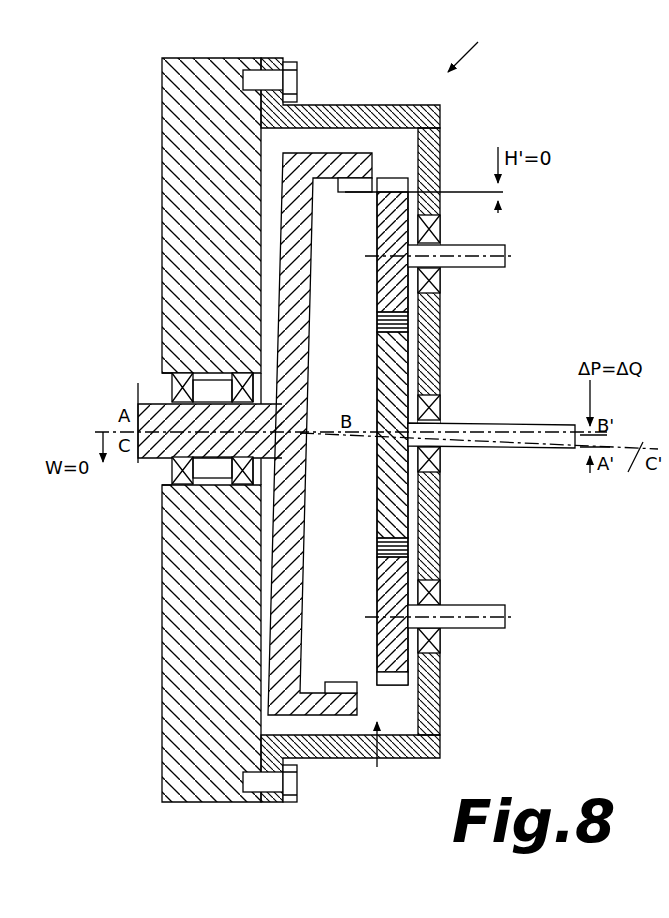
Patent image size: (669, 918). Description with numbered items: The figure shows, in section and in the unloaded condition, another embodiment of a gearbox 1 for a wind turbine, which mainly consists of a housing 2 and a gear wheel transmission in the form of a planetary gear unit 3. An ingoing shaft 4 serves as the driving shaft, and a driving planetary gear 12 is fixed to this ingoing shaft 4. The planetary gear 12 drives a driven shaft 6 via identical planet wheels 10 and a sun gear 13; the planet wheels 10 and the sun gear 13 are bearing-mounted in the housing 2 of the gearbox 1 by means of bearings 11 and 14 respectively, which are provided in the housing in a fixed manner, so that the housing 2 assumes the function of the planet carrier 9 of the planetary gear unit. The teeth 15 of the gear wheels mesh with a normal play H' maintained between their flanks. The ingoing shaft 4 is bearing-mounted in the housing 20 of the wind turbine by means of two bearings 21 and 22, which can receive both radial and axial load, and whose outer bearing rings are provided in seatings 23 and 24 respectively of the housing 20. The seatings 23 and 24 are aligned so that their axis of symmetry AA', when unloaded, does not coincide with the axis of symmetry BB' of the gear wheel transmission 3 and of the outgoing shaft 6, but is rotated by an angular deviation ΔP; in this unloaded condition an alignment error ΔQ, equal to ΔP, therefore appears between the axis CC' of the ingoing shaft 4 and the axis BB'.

The gearbox 1 is at (465, 46).
The housing 2 is at (442, 108).
The planetary gear unit 3 is at (376, 767).
The ingoing shaft 4 is at (140, 394).
The driven shaft 6 is at (502, 432).
The planet carrier 9 is at (333, 158).
The planet wheels 10 is at (395, 305).
The bearings 11 is at (441, 228).
The driving planetary gear 12 is at (357, 186).
The sun gear 13 is at (400, 510).
The bearings 14 is at (438, 410).
The teeth 15 is at (400, 680).
The housing of the wind turbine 20 is at (173, 105).
The bearing 21 is at (172, 388).
The bearing 22 is at (250, 375).
The seating 23 is at (185, 375).
The seating 24 is at (253, 372).